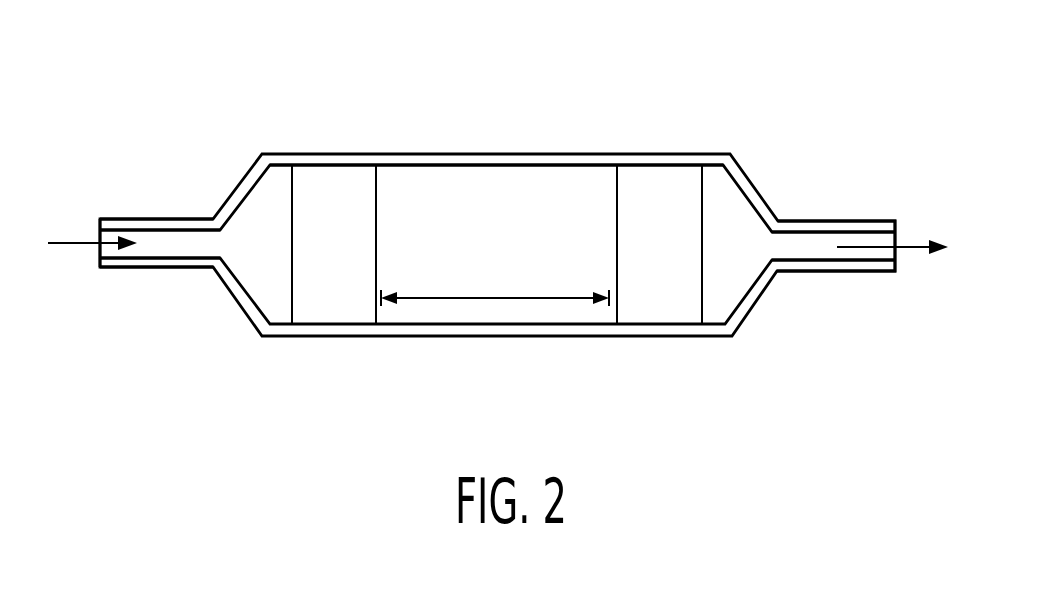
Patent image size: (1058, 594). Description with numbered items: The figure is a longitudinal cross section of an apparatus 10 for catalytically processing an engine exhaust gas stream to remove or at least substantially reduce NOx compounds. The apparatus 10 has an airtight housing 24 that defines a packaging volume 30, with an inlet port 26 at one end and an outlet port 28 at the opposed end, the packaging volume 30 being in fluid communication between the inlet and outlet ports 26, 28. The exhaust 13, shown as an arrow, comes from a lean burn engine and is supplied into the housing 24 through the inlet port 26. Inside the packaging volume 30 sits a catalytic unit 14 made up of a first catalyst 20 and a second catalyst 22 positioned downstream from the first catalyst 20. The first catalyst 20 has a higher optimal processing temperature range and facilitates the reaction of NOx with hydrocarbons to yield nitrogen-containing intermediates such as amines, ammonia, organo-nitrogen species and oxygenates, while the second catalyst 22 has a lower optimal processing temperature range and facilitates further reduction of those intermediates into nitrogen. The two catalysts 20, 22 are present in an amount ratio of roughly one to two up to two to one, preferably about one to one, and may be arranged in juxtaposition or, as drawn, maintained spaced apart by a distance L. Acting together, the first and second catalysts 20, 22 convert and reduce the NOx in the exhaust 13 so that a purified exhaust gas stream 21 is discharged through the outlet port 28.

The apparatus 10 is at (842, 108).
The exhaust 13 is at (68, 243).
The catalytic unit 14 is at (583, 153).
The first catalyst 20 is at (332, 307).
The purified exhaust gas stream 21 is at (912, 243).
The second catalyst 22 is at (657, 313).
The housing 24 is at (352, 160).
The inlet port 26 is at (112, 218).
The outlet port 28 is at (887, 272).
The packaging volume 30 is at (598, 183).
The distance L is at (478, 298).